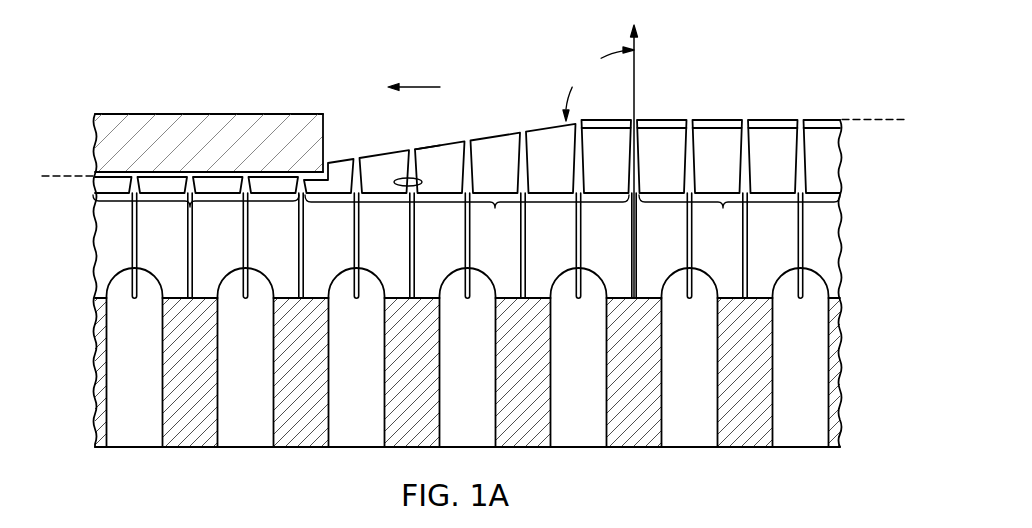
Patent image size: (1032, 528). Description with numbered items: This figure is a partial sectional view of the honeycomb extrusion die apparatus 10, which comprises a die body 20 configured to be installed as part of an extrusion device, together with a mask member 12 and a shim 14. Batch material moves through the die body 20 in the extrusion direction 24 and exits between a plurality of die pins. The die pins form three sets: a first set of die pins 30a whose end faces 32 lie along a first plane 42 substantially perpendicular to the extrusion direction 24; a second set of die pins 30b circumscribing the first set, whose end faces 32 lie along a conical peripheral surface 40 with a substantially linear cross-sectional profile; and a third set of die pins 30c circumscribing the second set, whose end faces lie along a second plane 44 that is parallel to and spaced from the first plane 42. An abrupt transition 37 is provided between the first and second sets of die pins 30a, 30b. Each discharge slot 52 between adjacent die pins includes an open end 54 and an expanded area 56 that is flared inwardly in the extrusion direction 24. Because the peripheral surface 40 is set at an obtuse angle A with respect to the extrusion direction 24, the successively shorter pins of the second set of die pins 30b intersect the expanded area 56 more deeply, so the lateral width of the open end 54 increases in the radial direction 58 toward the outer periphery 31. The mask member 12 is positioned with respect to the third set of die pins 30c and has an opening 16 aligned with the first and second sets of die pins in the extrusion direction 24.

The honeycomb extrusion die apparatus 10 is at (744, 84).
The mask member 12 is at (214, 119).
The shim 14 is at (104, 173).
The opening 16 is at (324, 117).
The die body 20 is at (66, 348).
The extrusion direction 24 is at (637, 77).
The first set of die pins 30a is at (738, 182).
The second set of die pins 30b is at (581, 142).
The third set of die pins 30c is at (190, 207).
The outer periphery 31 is at (330, 162).
The end face 32 is at (447, 138).
The abrupt transition 37 is at (605, 118).
The peripheral surface 40 is at (502, 129).
The first plane 42 is at (873, 118).
The second plane 44 is at (58, 178).
The discharge slot 52 is at (416, 266).
The open end 54 is at (415, 151).
The expanded area 56 is at (422, 182).
The radial direction 58 is at (422, 87).
The obtuse angle A is at (598, 84).